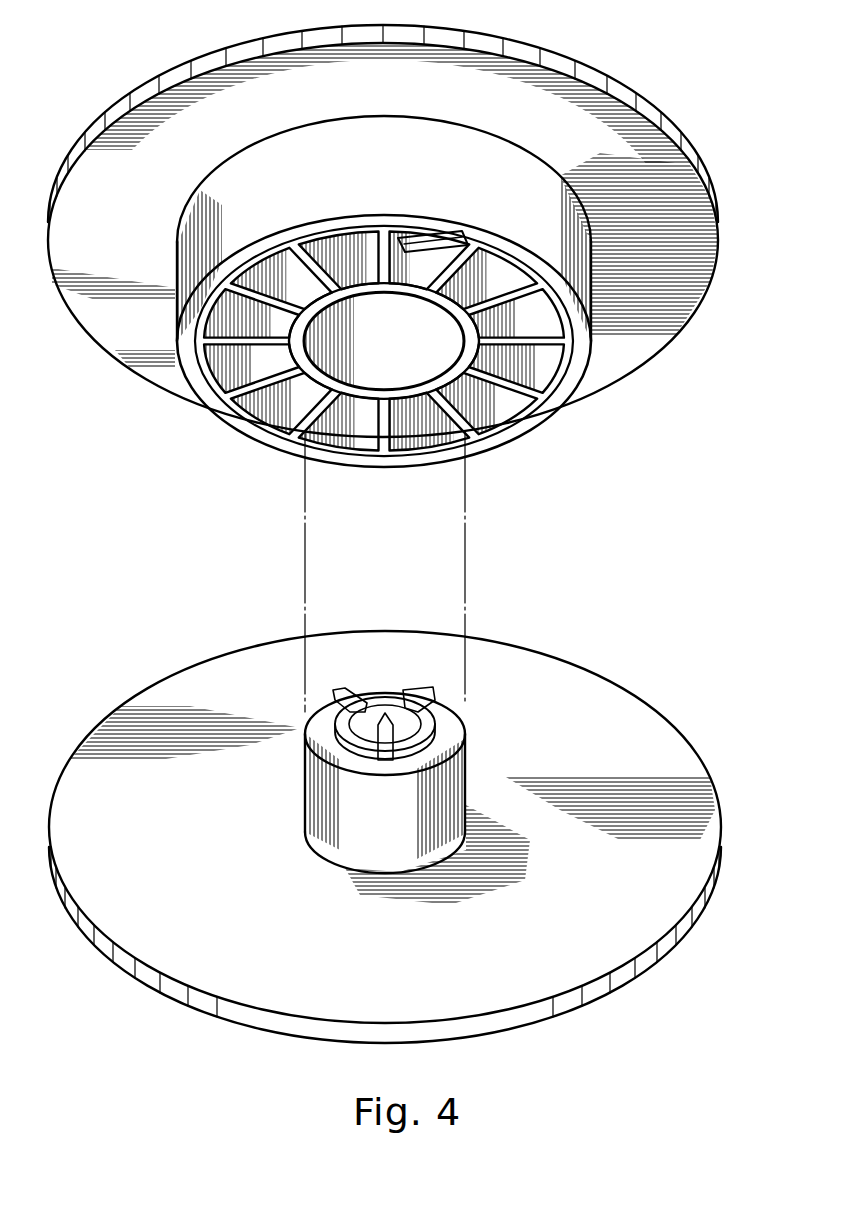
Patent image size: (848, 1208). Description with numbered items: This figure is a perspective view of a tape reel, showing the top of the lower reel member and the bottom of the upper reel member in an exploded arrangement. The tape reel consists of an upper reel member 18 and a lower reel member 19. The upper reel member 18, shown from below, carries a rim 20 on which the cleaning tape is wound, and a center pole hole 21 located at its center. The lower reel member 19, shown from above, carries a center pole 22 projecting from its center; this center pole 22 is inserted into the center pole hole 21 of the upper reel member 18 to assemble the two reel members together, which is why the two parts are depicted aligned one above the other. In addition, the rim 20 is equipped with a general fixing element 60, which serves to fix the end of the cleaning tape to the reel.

The upper reel member 18 is at (141, 62).
The lower reel member 19 is at (162, 658).
The rim 20 is at (587, 283).
The center pole hole 21 is at (433, 317).
The center pole 22 is at (467, 795).
The fixing element 60 is at (447, 236).